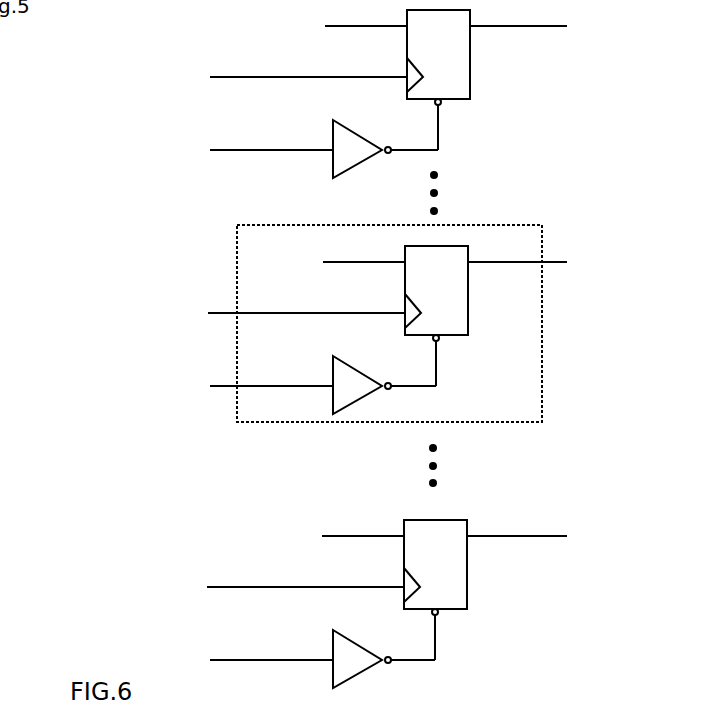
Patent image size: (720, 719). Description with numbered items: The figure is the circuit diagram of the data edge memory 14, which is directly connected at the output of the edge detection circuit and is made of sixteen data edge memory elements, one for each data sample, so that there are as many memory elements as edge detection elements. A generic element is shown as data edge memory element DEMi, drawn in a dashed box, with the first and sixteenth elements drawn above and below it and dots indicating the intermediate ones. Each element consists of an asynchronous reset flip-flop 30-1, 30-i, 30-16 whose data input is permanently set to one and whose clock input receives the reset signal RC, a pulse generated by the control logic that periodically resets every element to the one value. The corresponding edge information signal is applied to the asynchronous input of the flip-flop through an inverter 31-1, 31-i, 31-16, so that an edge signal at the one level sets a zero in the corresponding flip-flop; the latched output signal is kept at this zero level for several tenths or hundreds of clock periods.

The data edge memory 14 is at (70, 211).
The asynchronous reset flip-flop 30-1 is at (470, 80).
The asynchronous reset flip-flop 30-i is at (468, 316).
The asynchronous reset flip-flop 30-16 is at (467, 590).
The inverter 31-1 is at (370, 143).
The inverter 31-i is at (370, 379).
The inverter 31-16 is at (370, 653).
The data edge memory element DEMi is at (523, 225).